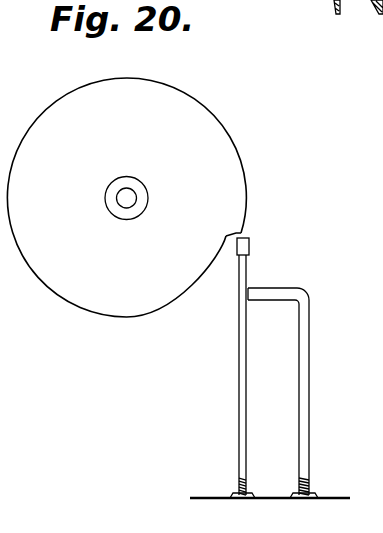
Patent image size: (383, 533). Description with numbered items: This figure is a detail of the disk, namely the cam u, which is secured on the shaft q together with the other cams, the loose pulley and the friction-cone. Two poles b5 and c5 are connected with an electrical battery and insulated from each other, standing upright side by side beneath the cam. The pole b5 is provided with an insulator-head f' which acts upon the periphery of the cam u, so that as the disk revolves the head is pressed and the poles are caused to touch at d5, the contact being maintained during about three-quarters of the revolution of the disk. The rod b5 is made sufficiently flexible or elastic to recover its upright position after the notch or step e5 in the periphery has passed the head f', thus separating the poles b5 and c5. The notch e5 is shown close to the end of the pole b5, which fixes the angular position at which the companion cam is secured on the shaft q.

The cam u is at (126, 197).
The shaft q is at (125, 198).
The notch e5 is at (237, 232).
The insulator-head f' is at (262, 239).
The point of contact d5 is at (250, 287).
The pole b5 is at (240, 335).
The pole c5 is at (359, 329).